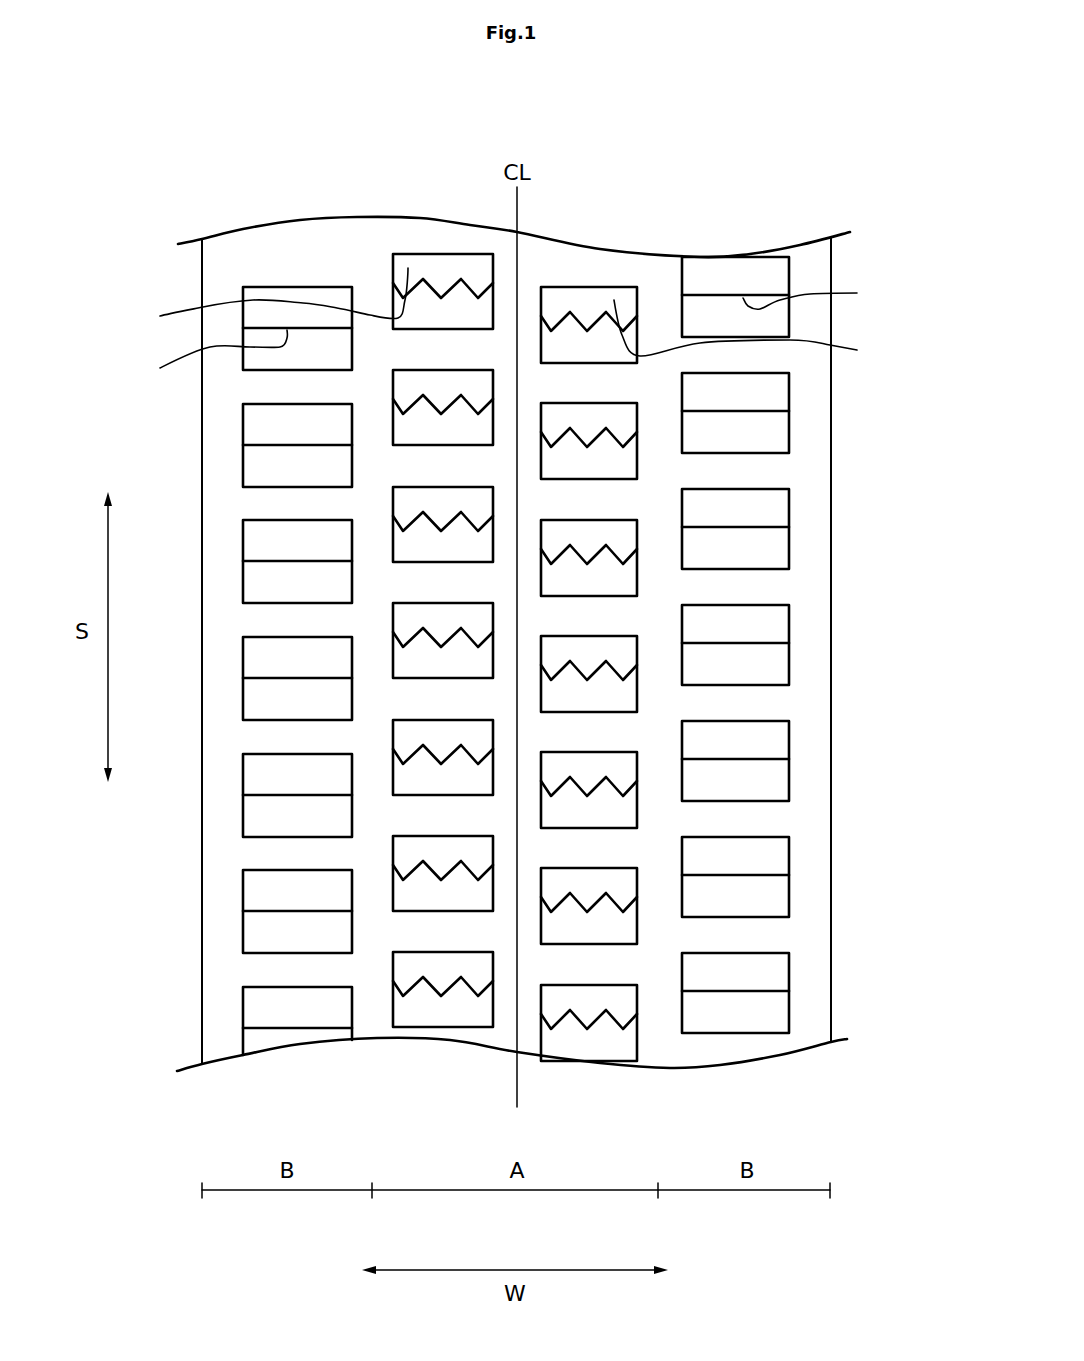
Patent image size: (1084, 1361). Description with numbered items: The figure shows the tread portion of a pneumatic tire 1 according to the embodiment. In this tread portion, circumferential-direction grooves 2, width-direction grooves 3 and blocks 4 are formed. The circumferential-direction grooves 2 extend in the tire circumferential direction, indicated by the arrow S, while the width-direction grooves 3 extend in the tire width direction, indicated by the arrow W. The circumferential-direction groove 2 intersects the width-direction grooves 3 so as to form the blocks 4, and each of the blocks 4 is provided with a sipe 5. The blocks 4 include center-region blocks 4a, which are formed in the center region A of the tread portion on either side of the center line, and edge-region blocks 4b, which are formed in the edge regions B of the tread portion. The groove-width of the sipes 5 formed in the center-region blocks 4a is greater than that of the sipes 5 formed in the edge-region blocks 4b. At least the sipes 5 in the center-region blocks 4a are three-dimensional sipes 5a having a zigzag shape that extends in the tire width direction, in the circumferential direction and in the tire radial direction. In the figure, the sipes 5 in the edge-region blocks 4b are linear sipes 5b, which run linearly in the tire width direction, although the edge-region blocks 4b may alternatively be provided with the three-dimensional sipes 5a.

The pneumatic tire 1 is at (775, 134).
The circumferential-direction groove 2 is at (375, 1018).
The width-direction groove 3 is at (757, 357).
The block 4 is at (425, 156).
The center-region block 4a is at (408, 265).
The edge-region block 4b is at (326, 300).
The sipe 5 is at (125, 307).
The three-dimensional sipe 5a is at (508, 316).
The linear sipe 5b is at (508, 333).